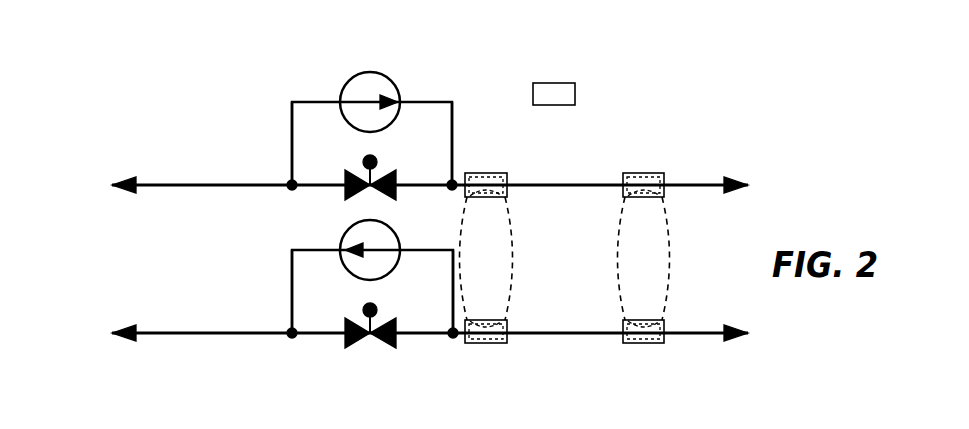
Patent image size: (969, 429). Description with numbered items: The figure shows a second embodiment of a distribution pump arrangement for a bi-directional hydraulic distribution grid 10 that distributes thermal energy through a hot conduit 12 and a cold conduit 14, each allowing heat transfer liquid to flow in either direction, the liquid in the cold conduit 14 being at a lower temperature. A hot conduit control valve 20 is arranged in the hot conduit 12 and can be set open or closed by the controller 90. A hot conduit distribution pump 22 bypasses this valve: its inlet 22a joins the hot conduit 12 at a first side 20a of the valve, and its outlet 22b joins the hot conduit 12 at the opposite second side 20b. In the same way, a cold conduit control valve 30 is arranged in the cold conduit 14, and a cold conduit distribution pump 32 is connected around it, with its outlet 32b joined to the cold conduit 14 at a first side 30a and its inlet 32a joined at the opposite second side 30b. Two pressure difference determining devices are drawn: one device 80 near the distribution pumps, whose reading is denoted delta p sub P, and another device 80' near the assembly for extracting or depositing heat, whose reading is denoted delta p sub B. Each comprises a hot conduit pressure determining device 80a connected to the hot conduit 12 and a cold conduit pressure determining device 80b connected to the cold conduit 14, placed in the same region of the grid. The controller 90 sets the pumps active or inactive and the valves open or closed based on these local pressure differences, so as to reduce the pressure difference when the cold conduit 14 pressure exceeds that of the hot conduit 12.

The bi-directional hydraulic distribution grid 10 is at (148, 156).
The hot conduit 12 is at (212, 185).
The cold conduit 14 is at (205, 334).
The hot conduit control valve 20 is at (350, 172).
The first side of the hot conduit control valve 20a is at (292, 185).
The second side of the hot conduit control valve 20b is at (455, 183).
The hot conduit distribution pump 22 is at (373, 90).
The inlet 22a is at (292, 102).
The outlet 22b is at (452, 102).
The cold conduit control valve 30 is at (348, 345).
The first side of the cold conduit control valve 30a is at (292, 335).
The second side of the cold conduit control valve 30b is at (452, 335).
The cold conduit distribution pump 32 is at (398, 267).
The inlet 32a is at (453, 250).
The outlet 32b is at (292, 250).
The pressure difference determining device 80 is at (523, 258).
The pressure difference determining device 80' is at (684, 258).
The hot conduit pressure determining device 80a is at (500, 175).
The cold conduit pressure determining device 80b is at (505, 343).
The controller 90 is at (555, 83).